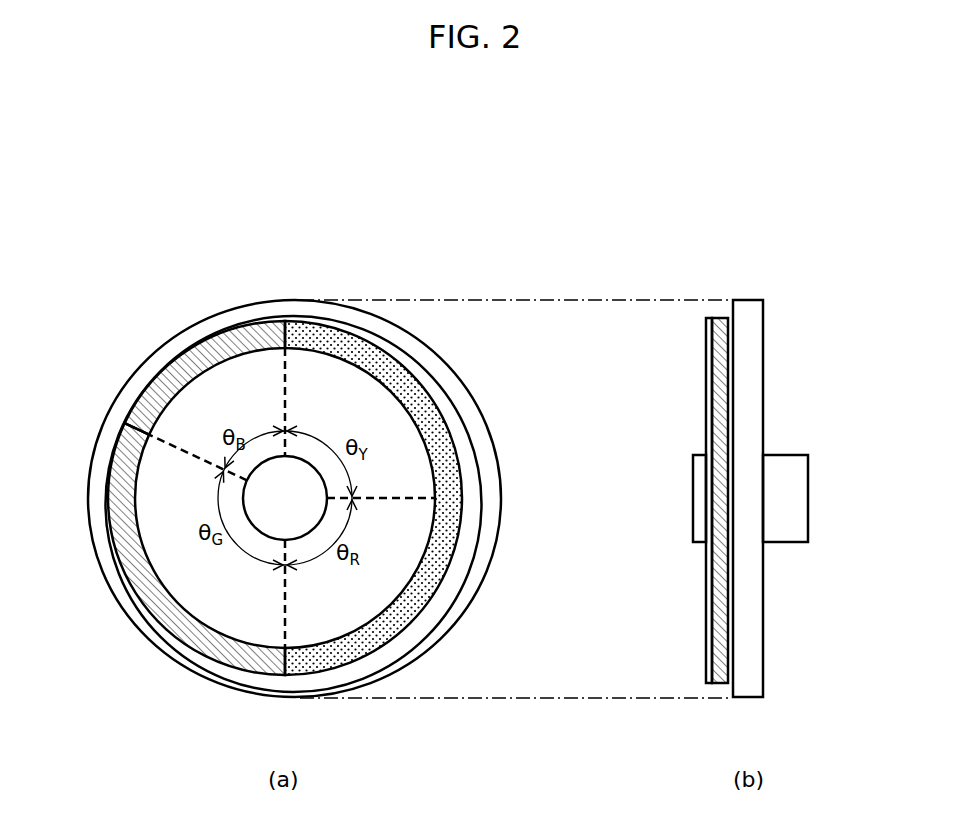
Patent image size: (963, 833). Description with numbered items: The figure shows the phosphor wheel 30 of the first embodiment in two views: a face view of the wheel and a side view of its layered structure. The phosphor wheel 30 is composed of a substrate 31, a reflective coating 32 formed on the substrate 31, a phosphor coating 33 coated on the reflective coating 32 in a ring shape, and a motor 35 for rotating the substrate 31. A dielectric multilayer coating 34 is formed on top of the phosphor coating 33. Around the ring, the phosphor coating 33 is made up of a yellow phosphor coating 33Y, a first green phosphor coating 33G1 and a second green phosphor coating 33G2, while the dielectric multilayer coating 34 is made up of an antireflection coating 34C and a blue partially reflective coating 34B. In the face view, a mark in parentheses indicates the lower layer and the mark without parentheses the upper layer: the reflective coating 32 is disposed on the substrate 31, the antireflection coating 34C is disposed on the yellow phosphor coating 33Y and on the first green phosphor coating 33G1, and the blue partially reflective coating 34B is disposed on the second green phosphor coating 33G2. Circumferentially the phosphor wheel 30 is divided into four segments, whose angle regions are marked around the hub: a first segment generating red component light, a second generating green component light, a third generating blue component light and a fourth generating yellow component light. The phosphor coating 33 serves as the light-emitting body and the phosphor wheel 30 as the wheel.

The phosphor wheel 30 is at (343, 168).
The substrate 31 is at (752, 337).
The reflective coating 32 is at (340, 320).
The phosphor coating 33 is at (717, 316).
The dielectric multilayer coating 34 is at (706, 333).
The blue partially reflective coating 34B is at (198, 332).
The antireflection coating 34C is at (360, 537).
The motor 35 is at (297, 510).
The first green phosphor coating 33G1 is at (195, 637).
The second green phosphor coating 33G2 is at (203, 353).
The yellow phosphor coating 33Y is at (440, 445).